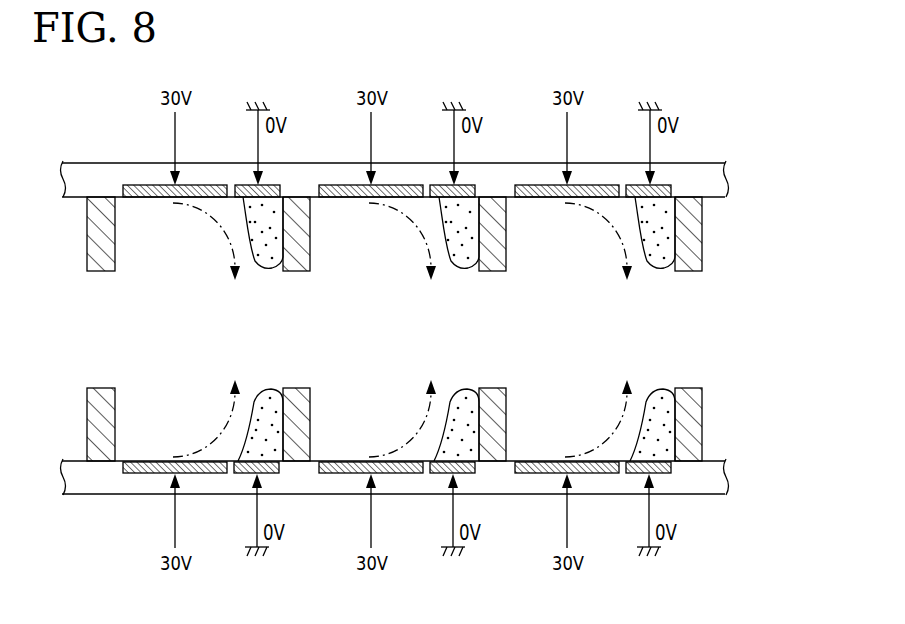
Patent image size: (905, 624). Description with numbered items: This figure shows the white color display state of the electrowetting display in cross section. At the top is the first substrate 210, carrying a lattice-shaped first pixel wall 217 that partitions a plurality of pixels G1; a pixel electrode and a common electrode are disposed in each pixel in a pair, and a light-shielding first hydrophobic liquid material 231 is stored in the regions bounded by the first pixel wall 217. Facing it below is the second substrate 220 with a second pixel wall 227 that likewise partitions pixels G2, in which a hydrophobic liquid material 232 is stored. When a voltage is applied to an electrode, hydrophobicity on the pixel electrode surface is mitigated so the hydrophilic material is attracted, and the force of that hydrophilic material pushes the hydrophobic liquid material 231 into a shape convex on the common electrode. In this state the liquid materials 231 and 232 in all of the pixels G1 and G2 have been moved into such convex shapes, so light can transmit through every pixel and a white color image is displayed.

The first substrate 210 is at (737, 163).
The first pixel wall 217 is at (695, 225).
The first hydrophobic liquid material 231 is at (661, 253).
The second substrate 220 is at (737, 461).
The second pixel wall 227 is at (695, 405).
The hydrophobic liquid material 232 is at (657, 435).
The pixels G1 is at (157, 265).
The pixels G2 is at (157, 392).